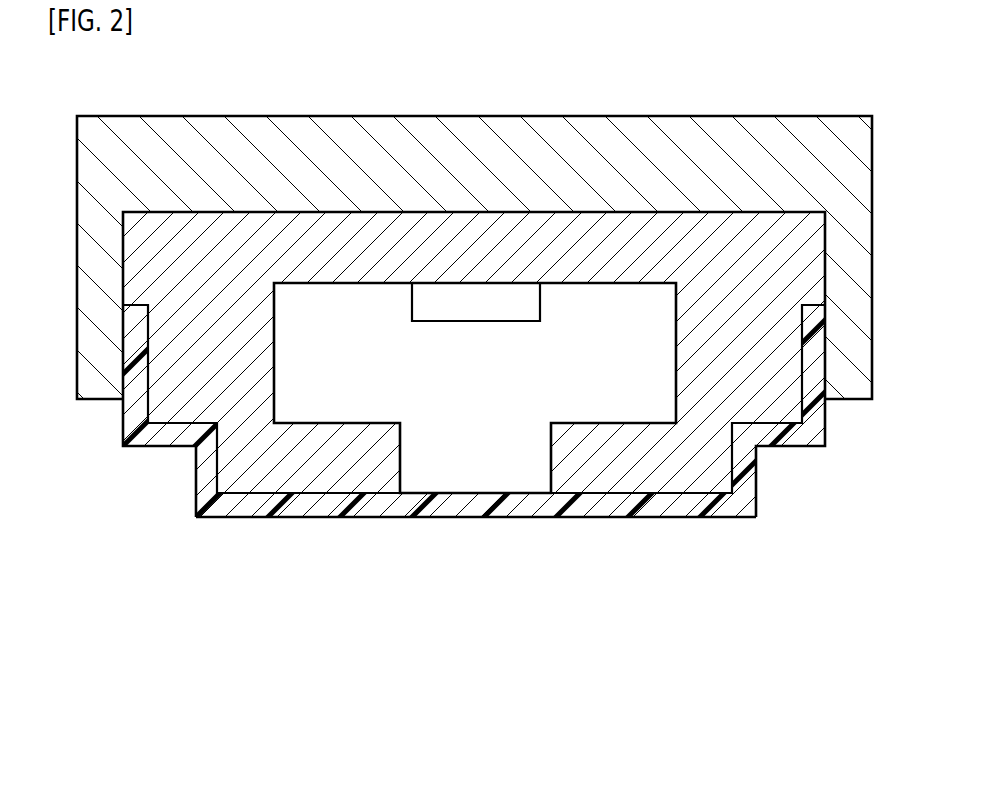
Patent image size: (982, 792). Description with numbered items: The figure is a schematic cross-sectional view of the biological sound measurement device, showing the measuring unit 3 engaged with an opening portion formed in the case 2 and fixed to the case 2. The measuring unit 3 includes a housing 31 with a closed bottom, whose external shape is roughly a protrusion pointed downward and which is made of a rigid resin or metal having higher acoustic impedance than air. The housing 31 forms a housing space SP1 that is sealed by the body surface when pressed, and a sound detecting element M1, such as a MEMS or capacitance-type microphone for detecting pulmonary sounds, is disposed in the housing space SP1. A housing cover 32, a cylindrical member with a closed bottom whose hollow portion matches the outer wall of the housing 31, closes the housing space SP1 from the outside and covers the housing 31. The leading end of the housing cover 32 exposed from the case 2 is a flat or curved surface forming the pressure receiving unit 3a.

The case 2 is at (708, 128).
The measuring unit 3 is at (772, 531).
The pressure receiving unit 3a is at (722, 517).
The housing 31 is at (250, 487).
The housing cover 32 is at (203, 517).
The sound detecting element M1 is at (498, 316).
The housing space SP1 is at (538, 390).